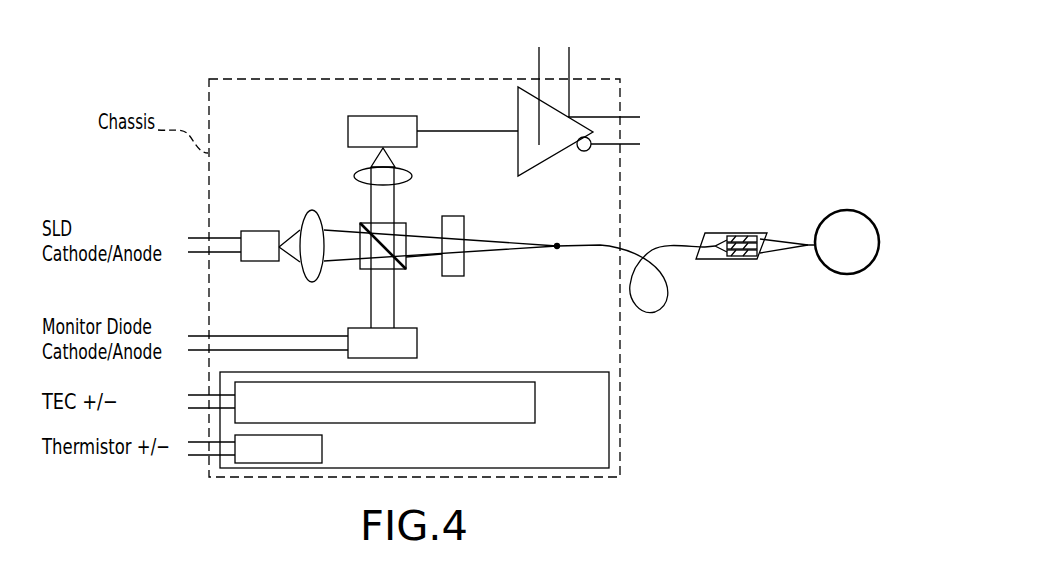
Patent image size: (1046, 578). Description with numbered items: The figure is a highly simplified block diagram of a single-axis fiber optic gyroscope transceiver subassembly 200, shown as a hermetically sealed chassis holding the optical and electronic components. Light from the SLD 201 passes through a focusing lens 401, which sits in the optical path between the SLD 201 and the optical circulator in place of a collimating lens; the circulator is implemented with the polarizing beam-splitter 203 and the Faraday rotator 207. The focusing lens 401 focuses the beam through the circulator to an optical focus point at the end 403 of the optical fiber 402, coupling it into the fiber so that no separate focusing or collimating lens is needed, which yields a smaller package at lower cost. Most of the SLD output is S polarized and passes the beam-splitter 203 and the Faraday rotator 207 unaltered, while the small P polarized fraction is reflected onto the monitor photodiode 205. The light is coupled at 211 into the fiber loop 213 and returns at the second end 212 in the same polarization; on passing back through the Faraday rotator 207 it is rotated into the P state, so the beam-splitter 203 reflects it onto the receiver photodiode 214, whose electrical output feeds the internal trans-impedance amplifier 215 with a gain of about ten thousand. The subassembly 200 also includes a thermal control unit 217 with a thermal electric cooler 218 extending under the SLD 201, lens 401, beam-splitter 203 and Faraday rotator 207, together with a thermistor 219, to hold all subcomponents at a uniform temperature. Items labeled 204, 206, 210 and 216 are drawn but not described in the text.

The transceiver subassembly 200 is at (302, 60).
The SLD 201 is at (260, 231).
The polarizing beam-splitter 203 is at (360, 223).
The reflected beam path 204 is at (371, 292).
The monitor photodiode 205 is at (417, 343).
The transmitted beam 206 is at (430, 257).
The Faraday rotator 207 is at (464, 222).
The photonic chip 210 is at (735, 233).
The coupling point 211 is at (790, 258).
The second end 212 is at (790, 258).
The fiber loop 213 is at (842, 210).
The receiver photodiode 214 is at (382, 116).
The trans-impedance amplifier 215 is at (518, 107).
The receiver output 216 is at (630, 117).
The thermal control unit 217 is at (609, 420).
The thermal electric cooler 218 is at (370, 423).
The thermistor 219 is at (322, 447).
The focusing lens 401 is at (308, 210).
The optical fiber 402 is at (579, 245).
The end of the optical fiber 403 is at (557, 250).